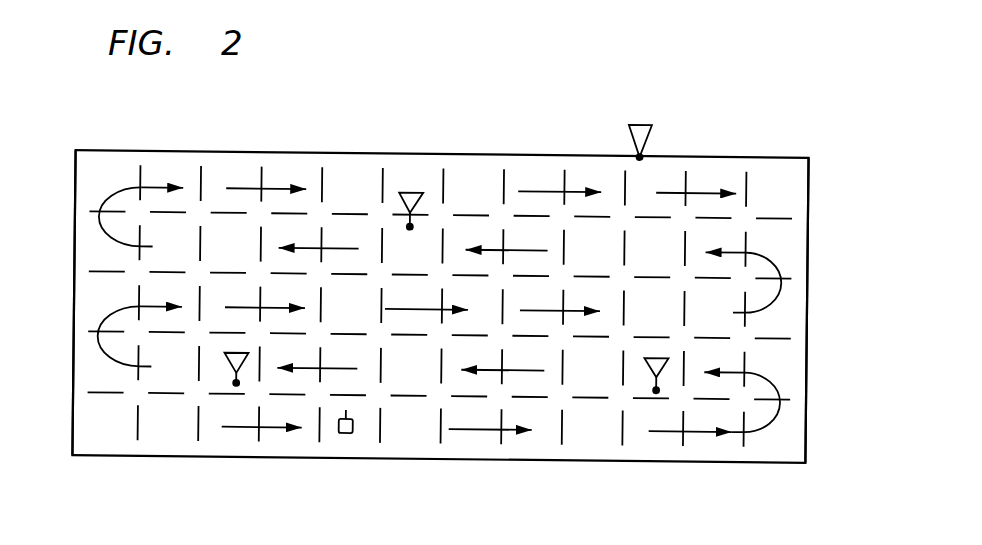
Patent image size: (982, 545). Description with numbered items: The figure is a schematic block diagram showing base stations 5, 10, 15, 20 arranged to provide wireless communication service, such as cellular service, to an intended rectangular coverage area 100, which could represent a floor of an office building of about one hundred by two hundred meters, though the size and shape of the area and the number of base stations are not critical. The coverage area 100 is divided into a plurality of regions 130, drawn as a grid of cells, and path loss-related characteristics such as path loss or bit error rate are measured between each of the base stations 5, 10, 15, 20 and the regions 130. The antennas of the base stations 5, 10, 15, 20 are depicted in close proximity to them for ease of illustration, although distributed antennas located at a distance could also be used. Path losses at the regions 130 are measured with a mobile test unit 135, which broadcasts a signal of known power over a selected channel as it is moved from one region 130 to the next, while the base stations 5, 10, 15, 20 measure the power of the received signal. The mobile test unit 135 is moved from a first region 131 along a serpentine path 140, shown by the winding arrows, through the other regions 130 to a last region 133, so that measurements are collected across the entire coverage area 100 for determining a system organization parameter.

The base station 5 is at (228, 362).
The base station 10 is at (657, 356).
The base station 15 is at (409, 192).
The base station 20 is at (647, 125).
The coverage area 100 is at (770, 157).
The regions 130 is at (238, 149).
The first region 131 is at (74, 410).
The last region 133 is at (797, 196).
The mobile test unit 135 is at (343, 435).
The serpentine path 140 is at (487, 431).